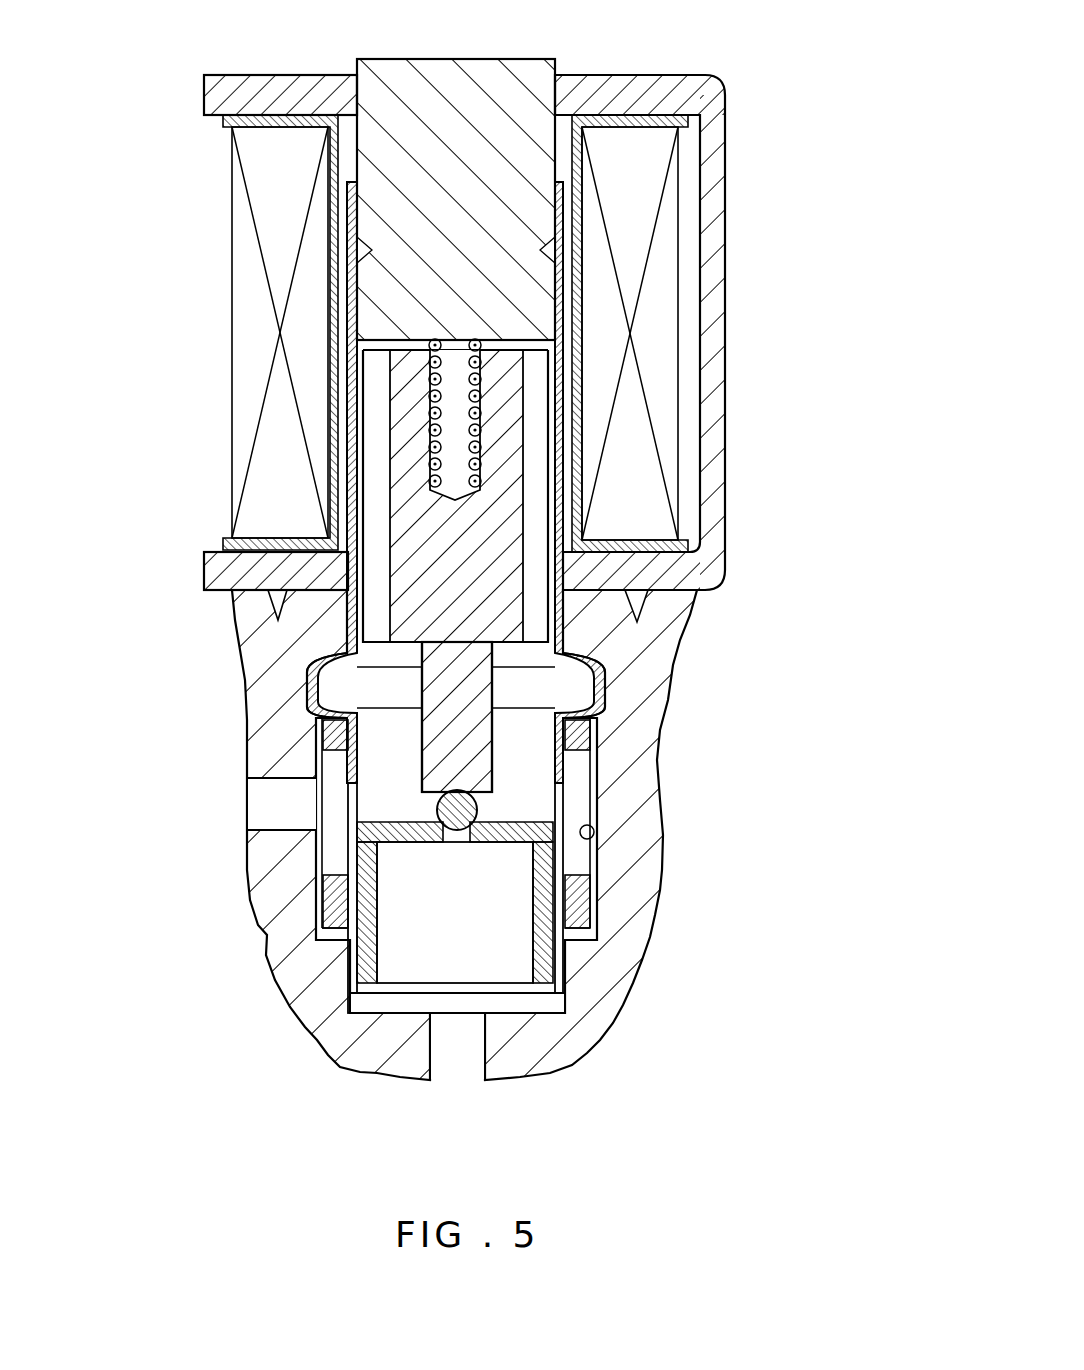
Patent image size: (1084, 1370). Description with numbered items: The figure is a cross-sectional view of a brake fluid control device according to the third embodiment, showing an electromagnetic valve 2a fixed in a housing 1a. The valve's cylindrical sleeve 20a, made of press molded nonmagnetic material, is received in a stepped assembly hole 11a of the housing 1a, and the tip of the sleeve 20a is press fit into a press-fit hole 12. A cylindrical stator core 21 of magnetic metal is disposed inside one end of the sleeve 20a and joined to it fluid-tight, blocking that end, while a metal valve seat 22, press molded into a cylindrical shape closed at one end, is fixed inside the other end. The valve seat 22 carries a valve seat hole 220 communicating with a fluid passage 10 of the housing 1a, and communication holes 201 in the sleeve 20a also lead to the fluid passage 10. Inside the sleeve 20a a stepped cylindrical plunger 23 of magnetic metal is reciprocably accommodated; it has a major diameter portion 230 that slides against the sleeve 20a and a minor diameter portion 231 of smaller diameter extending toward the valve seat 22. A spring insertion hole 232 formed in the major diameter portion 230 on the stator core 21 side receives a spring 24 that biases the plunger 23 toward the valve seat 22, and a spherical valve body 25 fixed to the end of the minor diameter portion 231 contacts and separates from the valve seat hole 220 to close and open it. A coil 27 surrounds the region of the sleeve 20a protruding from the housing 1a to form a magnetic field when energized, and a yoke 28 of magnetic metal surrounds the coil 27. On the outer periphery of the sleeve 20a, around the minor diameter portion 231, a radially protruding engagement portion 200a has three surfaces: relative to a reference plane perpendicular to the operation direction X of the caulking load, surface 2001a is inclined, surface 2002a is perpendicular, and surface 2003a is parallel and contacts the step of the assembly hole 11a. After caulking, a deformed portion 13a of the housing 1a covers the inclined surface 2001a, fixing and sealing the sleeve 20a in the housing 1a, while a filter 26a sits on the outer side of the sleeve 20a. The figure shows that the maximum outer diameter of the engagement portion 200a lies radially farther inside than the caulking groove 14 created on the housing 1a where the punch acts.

The housing 1a is at (305, 1052).
The electromagnetic valve 2a is at (466, 333).
The fluid passage 10 is at (258, 800).
The assembly hole 11a is at (594, 828).
The press-fit hole 12 is at (563, 1010).
The deformed portion 13a is at (330, 650).
The caulking groove 14 is at (237, 622).
The sleeve 20a is at (558, 490).
The stator core 21 is at (555, 62).
The valve seat 22 is at (552, 898).
The plunger 23 is at (332, 565).
The spring 24 is at (403, 348).
The spherical valve body 25 is at (440, 813).
The filter 26a is at (330, 905).
The coil 27 is at (660, 285).
The yoke 28 is at (712, 185).
The engagement portion 200a is at (601, 701).
The surface 2001a is at (600, 655).
The surface 2002a is at (605, 685).
The surface 2003a is at (602, 727).
The communication holes 201 is at (567, 797).
The valve seat hole 220 is at (462, 838).
The major diameter portion 230 is at (412, 453).
The minor diameter portion 231 is at (453, 697).
The spring insertion hole 232 is at (457, 425).
The operation direction X is at (473, 8).